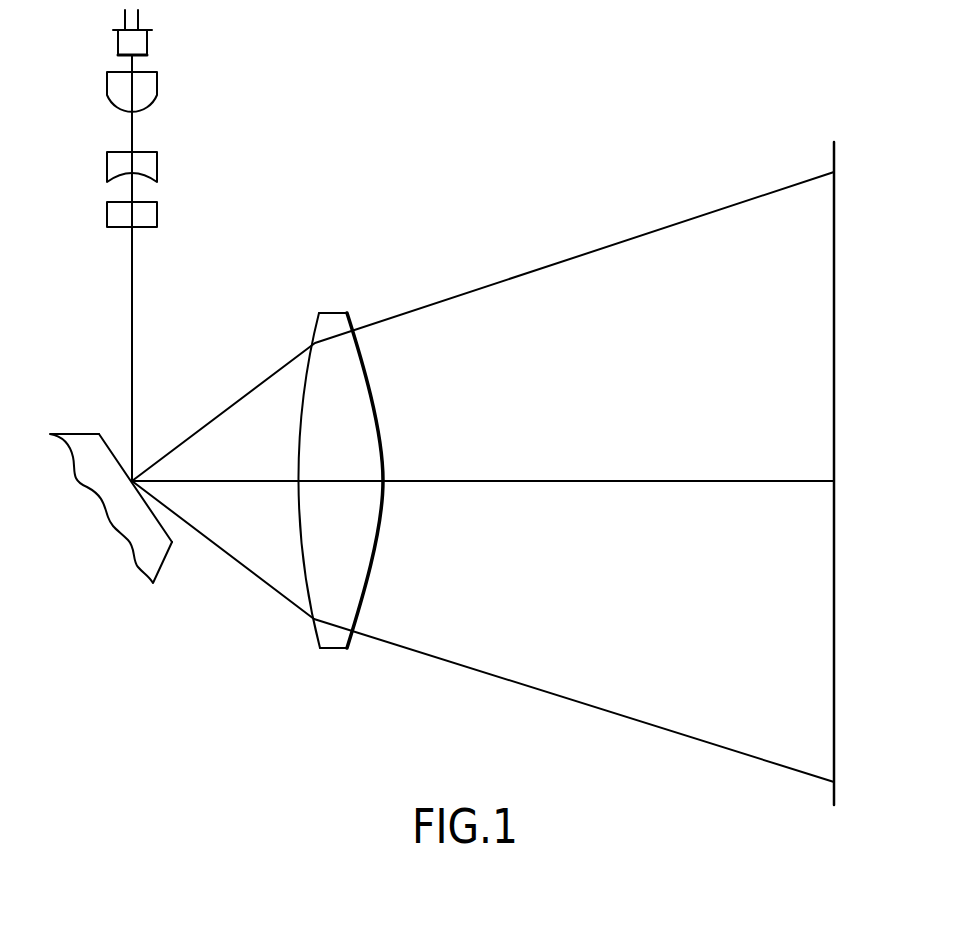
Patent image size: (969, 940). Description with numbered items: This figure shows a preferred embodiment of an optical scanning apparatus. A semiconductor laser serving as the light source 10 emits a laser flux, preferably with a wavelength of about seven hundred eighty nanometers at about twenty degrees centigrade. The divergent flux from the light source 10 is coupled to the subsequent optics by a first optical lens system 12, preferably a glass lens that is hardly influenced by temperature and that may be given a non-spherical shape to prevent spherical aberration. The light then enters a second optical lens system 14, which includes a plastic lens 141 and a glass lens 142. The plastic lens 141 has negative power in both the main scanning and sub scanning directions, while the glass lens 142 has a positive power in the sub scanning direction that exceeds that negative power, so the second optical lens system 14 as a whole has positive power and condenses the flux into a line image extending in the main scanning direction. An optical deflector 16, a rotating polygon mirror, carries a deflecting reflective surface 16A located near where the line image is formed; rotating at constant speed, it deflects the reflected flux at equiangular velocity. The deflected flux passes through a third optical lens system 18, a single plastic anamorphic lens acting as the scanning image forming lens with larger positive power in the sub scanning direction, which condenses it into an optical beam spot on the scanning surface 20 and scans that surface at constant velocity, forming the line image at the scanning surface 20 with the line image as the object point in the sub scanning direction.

The light source 10 is at (148, 43).
The first optical lens system 12 is at (158, 82).
The second optical lens system 14 is at (189, 183).
The plastic lens 141 is at (158, 158).
The glass lens 142 is at (158, 208).
The optical deflector 16 is at (76, 433).
The deflecting reflective surface 16A is at (158, 520).
The third optical lens system 18 is at (336, 651).
The scanning surface 20 is at (835, 583).